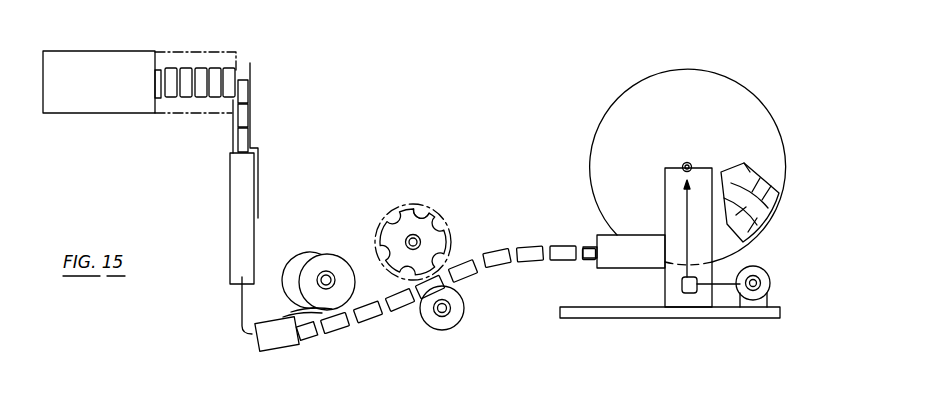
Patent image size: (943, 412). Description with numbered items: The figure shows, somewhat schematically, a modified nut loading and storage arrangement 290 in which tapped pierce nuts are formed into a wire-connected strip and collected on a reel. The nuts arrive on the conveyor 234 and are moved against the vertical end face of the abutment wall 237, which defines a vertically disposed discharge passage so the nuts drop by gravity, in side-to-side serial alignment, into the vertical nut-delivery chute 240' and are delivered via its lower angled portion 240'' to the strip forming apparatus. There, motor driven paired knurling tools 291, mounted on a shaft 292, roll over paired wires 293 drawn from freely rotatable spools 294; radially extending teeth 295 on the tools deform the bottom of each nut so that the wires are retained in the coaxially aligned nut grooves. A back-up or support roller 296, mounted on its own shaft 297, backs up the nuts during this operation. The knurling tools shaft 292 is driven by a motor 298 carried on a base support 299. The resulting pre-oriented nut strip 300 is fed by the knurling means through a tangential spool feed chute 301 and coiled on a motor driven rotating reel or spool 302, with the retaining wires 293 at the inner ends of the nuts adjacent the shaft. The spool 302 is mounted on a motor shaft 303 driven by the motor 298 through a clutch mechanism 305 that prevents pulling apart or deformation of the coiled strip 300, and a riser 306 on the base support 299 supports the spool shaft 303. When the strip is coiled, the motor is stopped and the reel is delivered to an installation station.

The conveyor 234 is at (95, 47).
The abutment wall 237 is at (253, 77).
The vertical nut-delivery chute 240' is at (215, 243).
The lower angled portion 240'' is at (292, 350).
The nut loading and storage arrangement 290 is at (563, 103).
The paired knurling tools 291 is at (391, 226).
The shaft 292 is at (421, 241).
The paired wires 293 is at (303, 318).
The spools 294 is at (325, 256).
The radially extending teeth 295 is at (421, 206).
The back-up or support roller 296 is at (450, 326).
The shaft 297 is at (450, 310).
The motor 298 is at (767, 275).
The base support 299 is at (757, 318).
The pre-oriented nut strip 300 is at (523, 250).
The tangential spool feed chute 301 is at (608, 268).
The rotating reel or spool 302 is at (768, 118).
The motor shaft 303 is at (687, 162).
The clutch mechanism 305 is at (690, 294).
The riser 306 is at (665, 177).